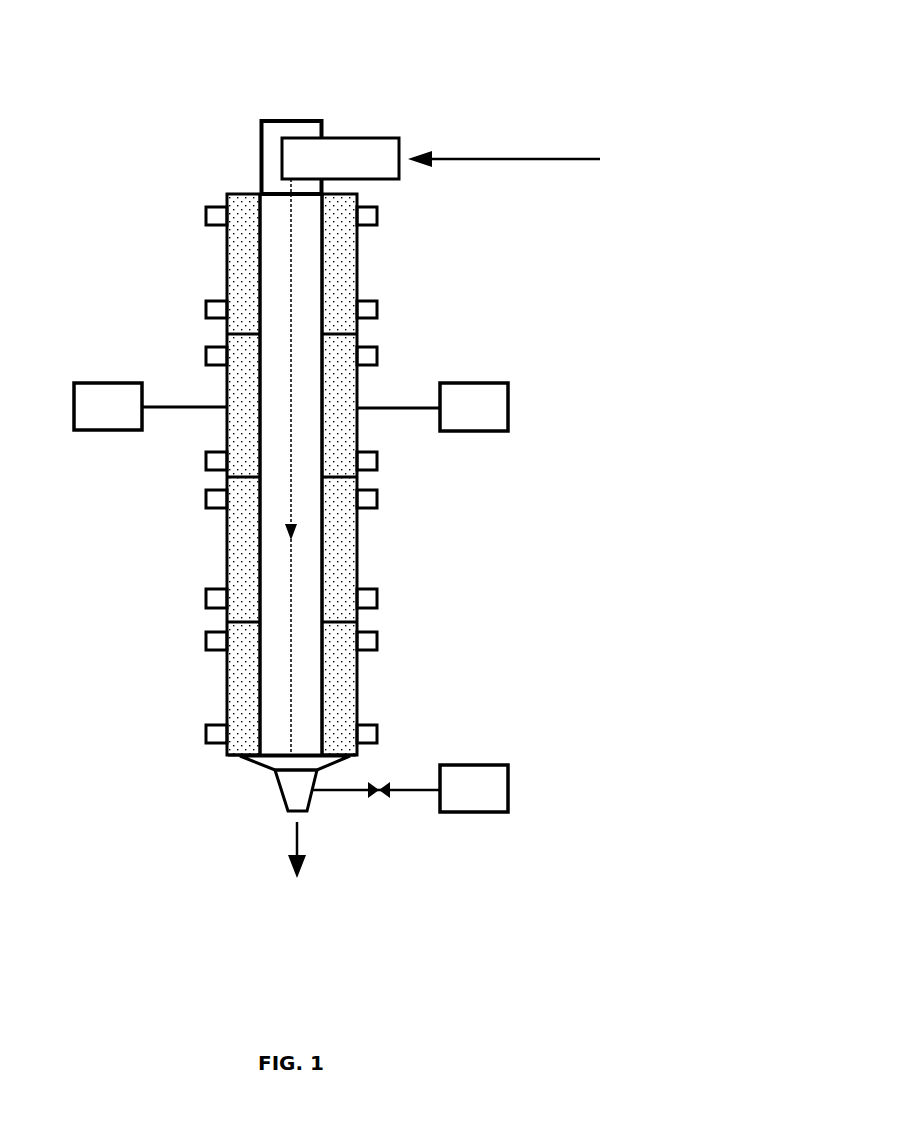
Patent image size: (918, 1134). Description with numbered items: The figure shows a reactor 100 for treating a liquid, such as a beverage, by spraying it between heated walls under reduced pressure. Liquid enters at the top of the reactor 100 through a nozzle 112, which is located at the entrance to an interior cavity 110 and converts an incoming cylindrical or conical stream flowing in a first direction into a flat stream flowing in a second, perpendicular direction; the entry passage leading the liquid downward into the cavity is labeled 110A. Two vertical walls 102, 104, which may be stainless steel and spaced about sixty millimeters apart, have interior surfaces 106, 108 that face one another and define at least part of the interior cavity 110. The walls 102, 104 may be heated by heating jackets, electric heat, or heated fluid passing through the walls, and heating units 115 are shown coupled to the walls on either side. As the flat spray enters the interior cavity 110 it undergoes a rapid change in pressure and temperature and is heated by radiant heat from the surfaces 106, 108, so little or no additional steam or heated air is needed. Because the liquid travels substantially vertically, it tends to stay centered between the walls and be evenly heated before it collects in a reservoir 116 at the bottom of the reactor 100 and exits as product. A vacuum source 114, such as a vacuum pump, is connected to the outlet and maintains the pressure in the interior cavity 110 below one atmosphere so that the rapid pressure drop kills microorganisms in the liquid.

The reactor 100 is at (84, 58).
The wall 102 is at (227, 683).
The wall 104 is at (358, 683).
The interior surface 106 is at (258, 555).
The interior surface 108 is at (321, 567).
The interior cavity 110 is at (268, 206).
The fluid inlet passage 110A is at (276, 187).
The nozzle 112 is at (400, 177).
The vacuum source 114 is at (510, 793).
The power supply 115 is at (291, 407).
The reservoir 116 is at (265, 770).